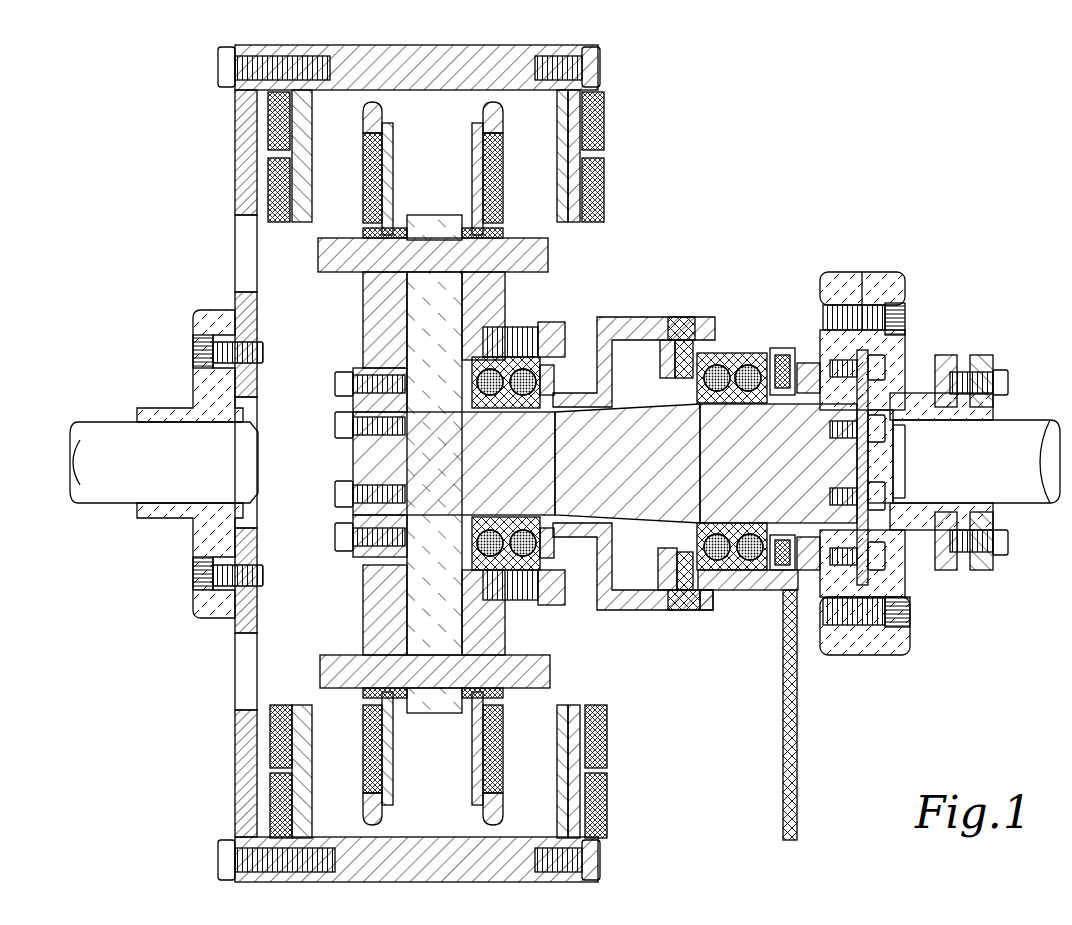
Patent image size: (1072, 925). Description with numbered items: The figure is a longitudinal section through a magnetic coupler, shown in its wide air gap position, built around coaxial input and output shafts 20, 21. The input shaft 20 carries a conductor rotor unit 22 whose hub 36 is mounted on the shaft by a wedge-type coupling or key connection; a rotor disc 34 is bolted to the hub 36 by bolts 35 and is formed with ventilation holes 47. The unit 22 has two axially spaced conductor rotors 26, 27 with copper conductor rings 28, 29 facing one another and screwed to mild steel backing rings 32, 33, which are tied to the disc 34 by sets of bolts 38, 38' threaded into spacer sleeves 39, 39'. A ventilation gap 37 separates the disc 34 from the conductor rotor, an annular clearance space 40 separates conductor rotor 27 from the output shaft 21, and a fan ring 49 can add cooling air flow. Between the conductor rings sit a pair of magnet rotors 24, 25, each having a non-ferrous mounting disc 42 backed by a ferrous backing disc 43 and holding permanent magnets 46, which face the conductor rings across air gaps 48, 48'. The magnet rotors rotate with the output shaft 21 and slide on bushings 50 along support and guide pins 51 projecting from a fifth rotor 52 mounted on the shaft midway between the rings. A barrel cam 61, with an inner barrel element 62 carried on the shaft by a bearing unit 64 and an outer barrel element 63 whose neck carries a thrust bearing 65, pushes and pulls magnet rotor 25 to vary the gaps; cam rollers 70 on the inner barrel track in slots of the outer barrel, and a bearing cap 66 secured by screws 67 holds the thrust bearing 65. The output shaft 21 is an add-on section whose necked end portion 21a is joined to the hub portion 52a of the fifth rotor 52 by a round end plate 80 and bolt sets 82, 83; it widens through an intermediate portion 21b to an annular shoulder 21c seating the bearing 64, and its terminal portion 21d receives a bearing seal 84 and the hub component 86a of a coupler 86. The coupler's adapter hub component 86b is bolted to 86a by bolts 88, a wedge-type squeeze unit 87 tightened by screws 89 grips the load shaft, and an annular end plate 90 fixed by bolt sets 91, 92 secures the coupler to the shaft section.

The input shaft 20 is at (96, 428).
The output shaft 21 is at (1030, 496).
The necked end portion 21a is at (382, 468).
The shaft tapered portion 21b is at (708, 452).
The annular shoulder 21c is at (770, 405).
The outer cylindrical terminal portion 21d is at (845, 478).
The conductor rotor unit 22 is at (232, 167).
The magnet rotor 24 is at (361, 205).
The magnet rotor 25 is at (470, 184).
The conductor rotor 26 is at (232, 122).
The conductor rotor 27 is at (553, 191).
The conductor ring 28 is at (312, 110).
The conductor ring 29 is at (557, 152).
The backing ring 32 is at (300, 705).
The backing ring 33 is at (570, 705).
The rotor disc 34 is at (243, 197).
The bolts 35 is at (193, 348).
The hub 36 is at (200, 390).
The ventilation gap 37 is at (264, 217).
The bolts 38 is at (595, 65).
The bolts 38' is at (189, 73).
The spacer sleeve 39 is at (416, 91).
The spacer sleeve 39' is at (246, 57).
The annular clearance space 40 is at (568, 250).
The mounting disc 42 is at (381, 113).
The backing disc 43 is at (393, 164).
The permanent magnets 46 is at (363, 140).
The ventilation holes 47 is at (245, 252).
The air gap 48 is at (366, 756).
The air gap 48' is at (503, 756).
The fan ring 49 is at (266, 741).
The bushings 50 is at (360, 298).
The support and guide pins 51 is at (365, 280).
The fifth rotor 52 is at (433, 716).
The hub portion 52a is at (360, 558).
The barrel cam 61 is at (692, 302).
The inner barrel element 62 is at (740, 592).
The outer barrel element 63 is at (632, 608).
The bearing unit 64 is at (735, 530).
The thrust bearing 65 is at (500, 407).
The bearing cap 66 is at (528, 330).
The screws 67 is at (563, 326).
The cam rollers 70 is at (680, 600).
The round end plate 80 is at (355, 452).
The bolts 82 is at (336, 496).
The bolts 83 is at (340, 537).
The bearing seal 84 is at (803, 346).
The coupler 86 is at (886, 270).
The hub component 86a is at (840, 270).
The adapter hub component 86b is at (906, 348).
The squeeze unit 87 is at (992, 352).
The bolts 88 is at (900, 300).
The screws 89 is at (1009, 383).
The annular end plate 90 is at (856, 447).
The bolts 91 is at (880, 497).
The bolts 92 is at (880, 560).